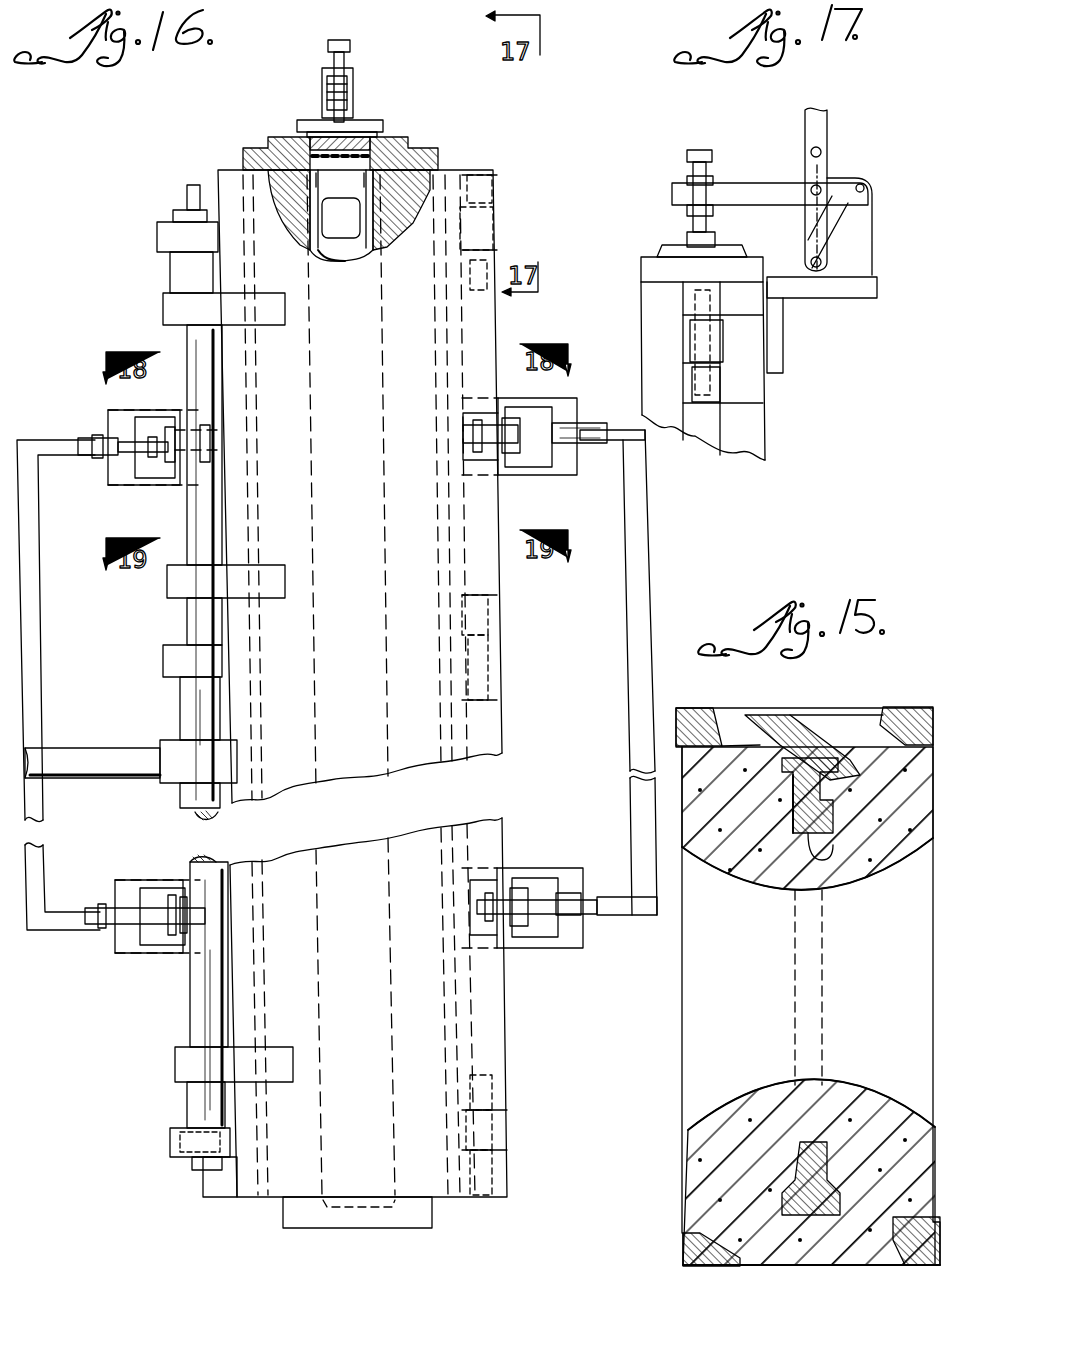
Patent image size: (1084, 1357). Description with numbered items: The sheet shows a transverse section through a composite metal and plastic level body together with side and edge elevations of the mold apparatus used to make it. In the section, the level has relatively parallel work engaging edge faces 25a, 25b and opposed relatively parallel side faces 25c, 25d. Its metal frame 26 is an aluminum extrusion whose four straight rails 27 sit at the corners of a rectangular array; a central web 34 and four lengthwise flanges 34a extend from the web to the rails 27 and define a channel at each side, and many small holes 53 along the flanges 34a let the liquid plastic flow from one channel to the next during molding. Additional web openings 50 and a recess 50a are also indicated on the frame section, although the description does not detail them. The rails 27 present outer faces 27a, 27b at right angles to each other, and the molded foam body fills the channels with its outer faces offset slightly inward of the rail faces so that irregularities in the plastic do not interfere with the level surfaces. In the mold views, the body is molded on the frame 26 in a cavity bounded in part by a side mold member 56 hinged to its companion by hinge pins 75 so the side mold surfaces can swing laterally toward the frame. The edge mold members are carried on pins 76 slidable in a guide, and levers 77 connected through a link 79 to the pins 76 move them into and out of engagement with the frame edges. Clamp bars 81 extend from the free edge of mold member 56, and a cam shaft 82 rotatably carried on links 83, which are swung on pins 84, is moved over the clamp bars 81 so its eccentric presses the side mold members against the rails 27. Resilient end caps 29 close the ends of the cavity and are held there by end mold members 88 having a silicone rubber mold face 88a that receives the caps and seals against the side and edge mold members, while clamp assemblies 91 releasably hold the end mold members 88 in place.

In FIG. 16, the mold face 88a is at (290, 145).
In FIG. 16, the resilient end caps 29 is at (362, 137).
In FIG. 16, the end mold members 88 is at (410, 140).
In FIG. 17, the end mold members 88 is at (667, 253).
In FIG. 16, the second side mold member 56 is at (275, 188).
In FIG. 16, the hinge pins 75 is at (492, 185).
In FIG. 17, the hinge pins 75 is at (710, 388).
In FIG. 16, the metal frame 26 is at (354, 252).
In FIG. 15, the metal frame 26 is at (790, 826).
In FIG. 16, the pins 76 is at (170, 425).
In FIG. 16, the levers 77 is at (60, 462).
In FIG. 16, the link 79 is at (148, 460).
In FIG. 16, the clamp bars 81 is at (170, 592).
In FIG. 16, the pins 84 is at (90, 748).
In FIG. 16, the links 83 is at (170, 1147).
In FIG. 16, the cam shaft 82 is at (196, 1170).
In FIG. 17, the clamp assemblies 91 is at (770, 192).
In FIG. 15, the flanges 34a is at (720, 745).
In FIG. 15, the work engaging edge face 25a is at (865, 712).
In FIG. 15, the rails 27 is at (925, 712).
In FIG. 15, the holes 53 is at (752, 752).
In FIG. 15, the central web 34 is at (836, 832).
In FIG. 15, the recess 50a is at (818, 862).
In FIG. 15, the side face 25c is at (690, 850).
In FIG. 15, the core face 50 is at (890, 868).
In FIG. 15, the side face 25d is at (935, 1145).
In FIG. 15, the outer face 27a is at (683, 1243).
In FIG. 15, the outer face 27b is at (697, 1268).
In FIG. 15, the work engaging edge face 25b is at (820, 1266).